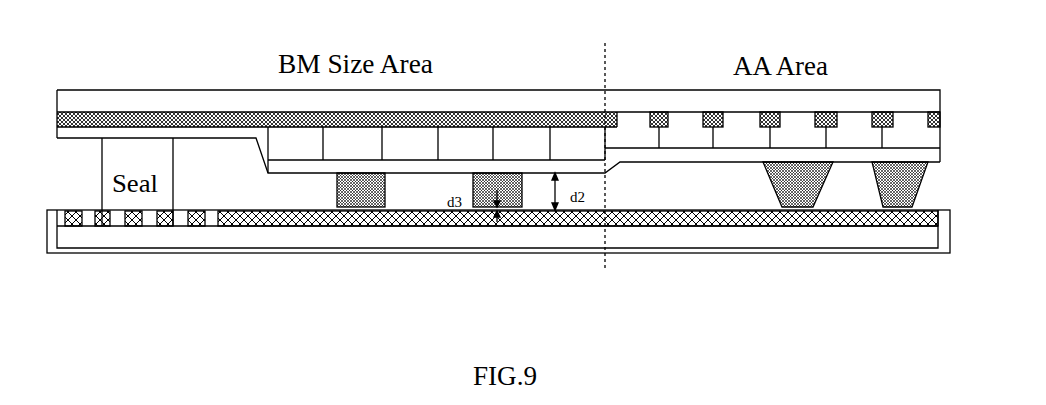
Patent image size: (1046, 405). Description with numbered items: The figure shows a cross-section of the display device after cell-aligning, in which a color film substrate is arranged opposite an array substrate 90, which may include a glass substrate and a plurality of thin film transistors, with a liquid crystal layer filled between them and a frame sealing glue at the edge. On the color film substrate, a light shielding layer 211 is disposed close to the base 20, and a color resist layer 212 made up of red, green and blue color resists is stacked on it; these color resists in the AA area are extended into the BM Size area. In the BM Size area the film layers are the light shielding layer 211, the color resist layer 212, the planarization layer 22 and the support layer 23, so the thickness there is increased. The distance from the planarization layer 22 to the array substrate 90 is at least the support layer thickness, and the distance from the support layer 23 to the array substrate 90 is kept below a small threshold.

The base 20 is at (535, 100).
The light shielding layer 211 is at (183, 120).
The planarization layer 22 is at (90, 137).
The color resist layer 212 is at (422, 143).
The support layer 23 is at (357, 195).
The array substrate 90 is at (655, 250).